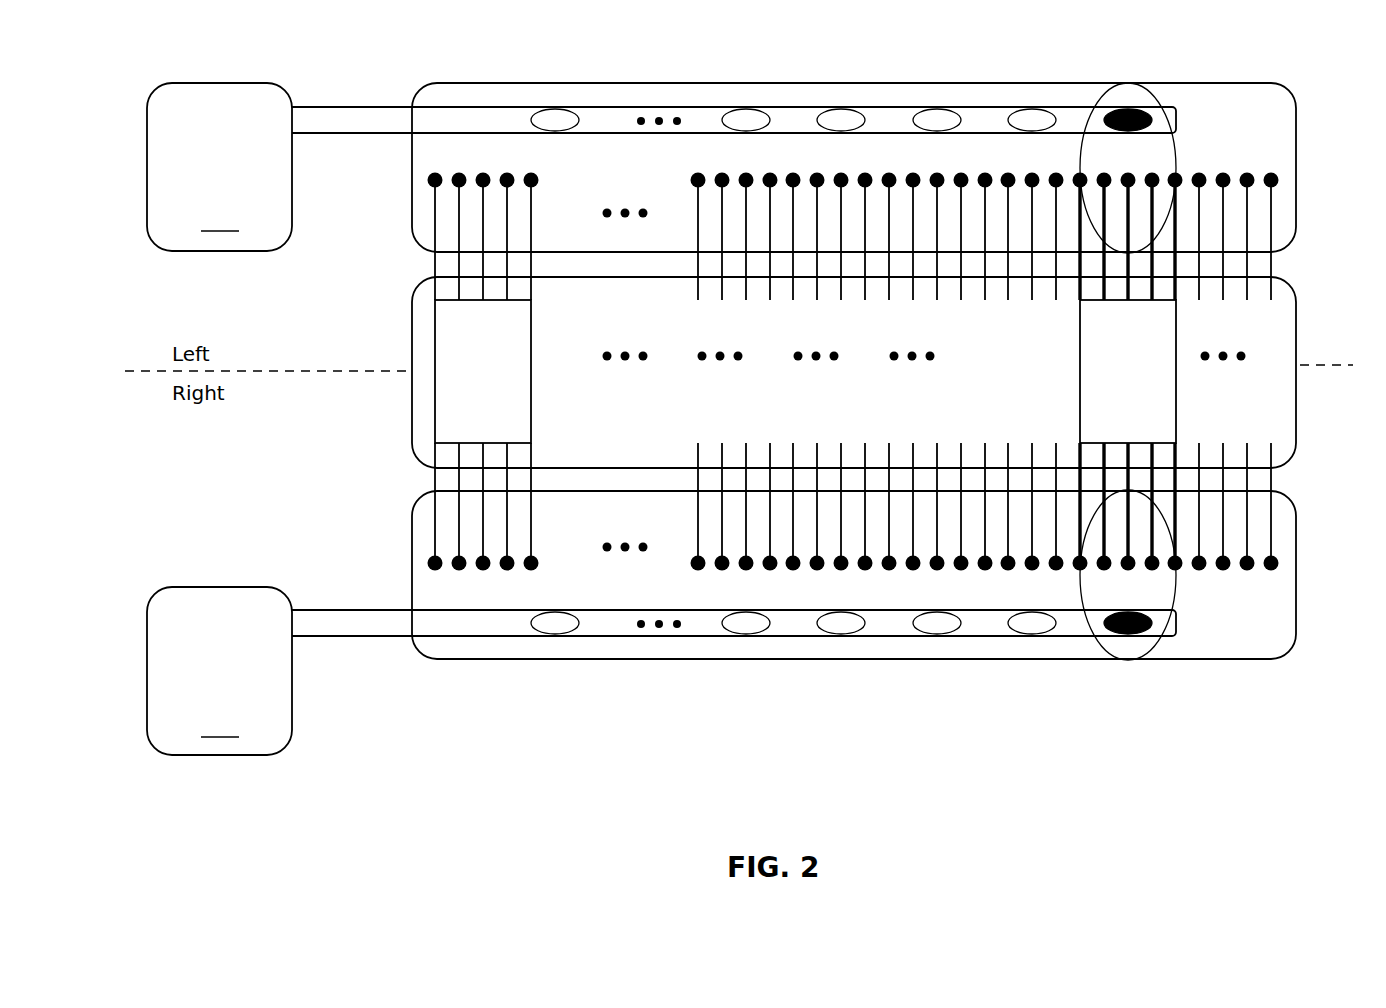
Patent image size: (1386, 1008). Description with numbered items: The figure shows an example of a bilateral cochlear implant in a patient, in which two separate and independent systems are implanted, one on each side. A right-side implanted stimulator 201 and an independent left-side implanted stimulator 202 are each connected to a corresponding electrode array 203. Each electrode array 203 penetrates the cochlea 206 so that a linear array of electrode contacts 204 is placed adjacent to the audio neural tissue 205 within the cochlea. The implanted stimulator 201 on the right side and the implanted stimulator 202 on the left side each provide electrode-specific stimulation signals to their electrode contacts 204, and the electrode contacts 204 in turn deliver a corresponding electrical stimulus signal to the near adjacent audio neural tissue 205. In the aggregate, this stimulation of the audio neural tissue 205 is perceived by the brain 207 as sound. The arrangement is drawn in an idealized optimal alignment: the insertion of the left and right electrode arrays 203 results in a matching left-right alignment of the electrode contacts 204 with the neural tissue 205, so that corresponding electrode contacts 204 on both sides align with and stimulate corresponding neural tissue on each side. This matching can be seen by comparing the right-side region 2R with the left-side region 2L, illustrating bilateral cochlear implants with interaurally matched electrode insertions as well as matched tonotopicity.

The right-side implanted stimulator 201 is at (219, 671).
The left-side implanted stimulator 202 is at (219, 167).
The electrode array 203 is at (362, 107).
The electrode contacts 204 is at (1110, 105).
The audio neural tissue 205 is at (1157, 177).
The cochlea 206 is at (412, 100).
The brain 207 is at (640, 443).
The left-side region 2L is at (1155, 98).
The right-side region 2R is at (1148, 655).